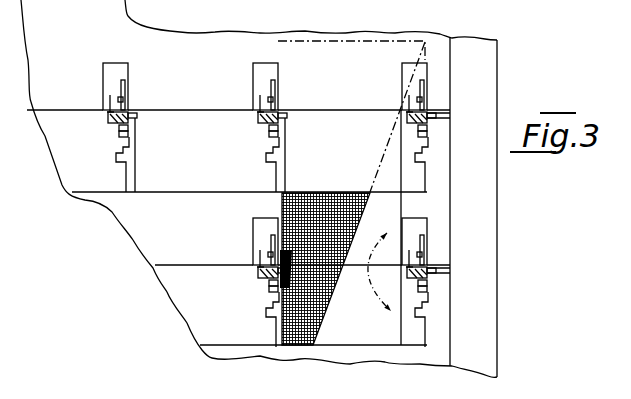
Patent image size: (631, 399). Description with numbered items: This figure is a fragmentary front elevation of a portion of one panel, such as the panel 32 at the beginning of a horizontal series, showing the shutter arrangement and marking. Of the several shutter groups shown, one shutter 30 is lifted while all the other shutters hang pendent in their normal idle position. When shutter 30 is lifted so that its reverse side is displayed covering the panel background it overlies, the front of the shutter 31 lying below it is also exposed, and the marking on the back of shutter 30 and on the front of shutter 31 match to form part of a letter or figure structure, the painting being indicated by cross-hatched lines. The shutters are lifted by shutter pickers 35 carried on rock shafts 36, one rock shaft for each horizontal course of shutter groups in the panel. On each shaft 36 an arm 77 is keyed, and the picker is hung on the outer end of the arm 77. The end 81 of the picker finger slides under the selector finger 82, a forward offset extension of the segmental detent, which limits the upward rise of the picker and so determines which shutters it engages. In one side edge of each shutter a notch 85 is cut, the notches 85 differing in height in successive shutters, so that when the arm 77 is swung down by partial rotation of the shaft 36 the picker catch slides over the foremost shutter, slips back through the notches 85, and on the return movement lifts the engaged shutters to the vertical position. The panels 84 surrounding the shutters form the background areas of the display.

The shutter 30 is at (387, 259).
The shutter 31 is at (325, 269).
The panel 32 is at (465, 26).
The shutter picker 35 is at (278, 107).
The rock shaft 36 is at (133, 112).
The arm 77 is at (116, 124).
The end of the picker finger 81 is at (137, 118).
The selector finger 82 is at (129, 136).
The panel cell 84 is at (238, 227).
The notch 85 is at (121, 97).